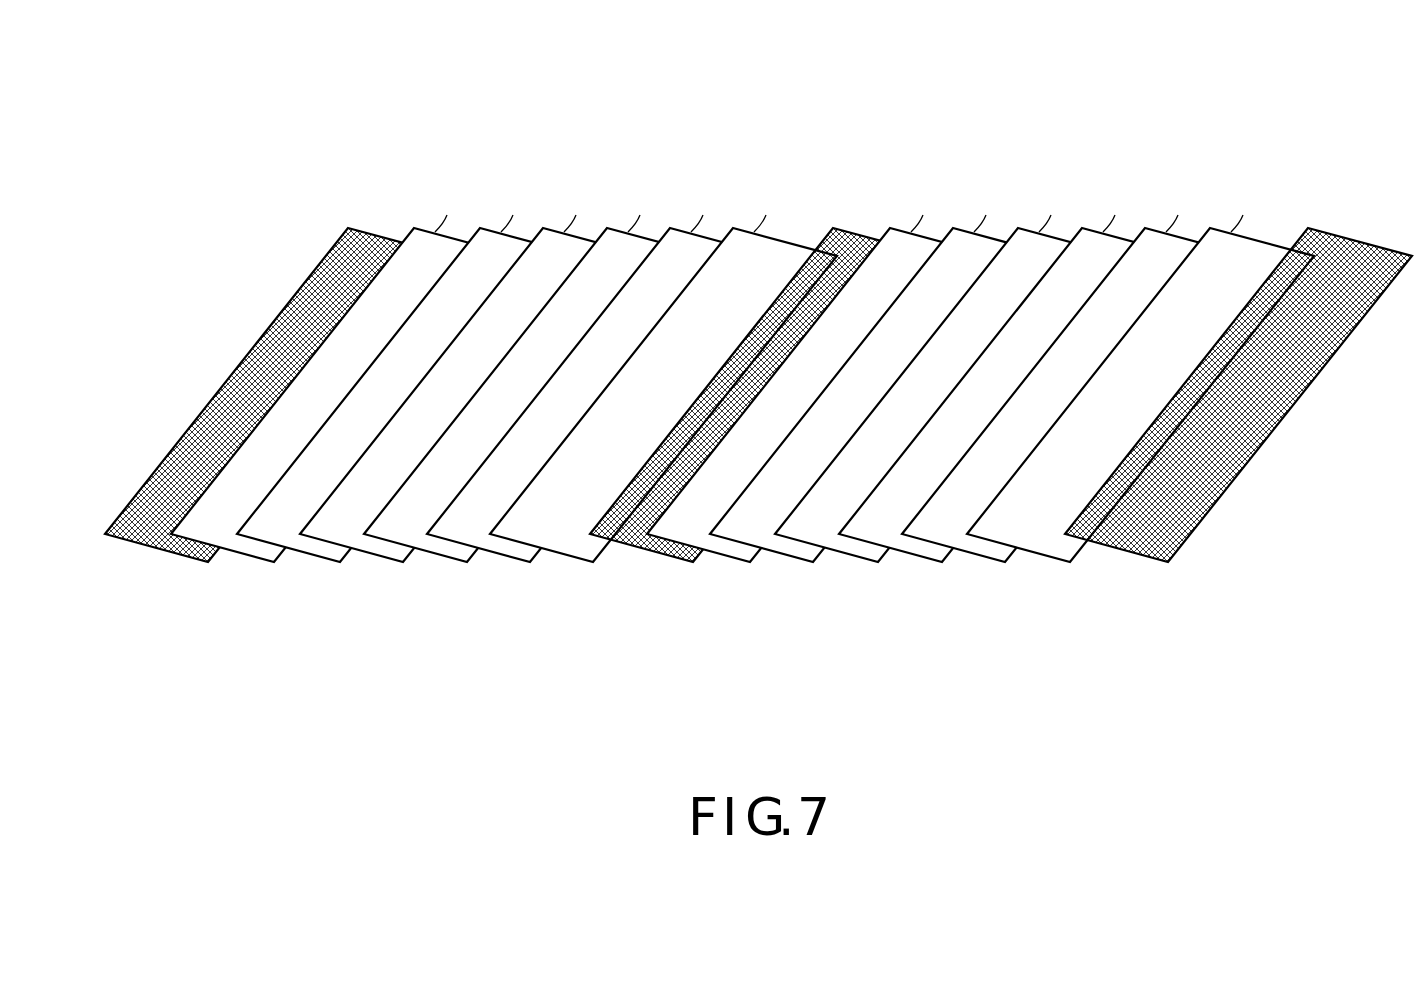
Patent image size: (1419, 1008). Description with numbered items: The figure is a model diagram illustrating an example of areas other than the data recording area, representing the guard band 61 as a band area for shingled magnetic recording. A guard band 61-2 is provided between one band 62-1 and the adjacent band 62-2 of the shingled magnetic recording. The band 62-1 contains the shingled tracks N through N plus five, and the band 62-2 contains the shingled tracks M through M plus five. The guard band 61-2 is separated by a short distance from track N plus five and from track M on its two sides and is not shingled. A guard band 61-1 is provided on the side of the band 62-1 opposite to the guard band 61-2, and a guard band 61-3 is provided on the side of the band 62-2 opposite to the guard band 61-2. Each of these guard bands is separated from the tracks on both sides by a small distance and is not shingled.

The guard band 61 is at (751, 388).
The guard band 61-1 is at (137, 545).
The guard band 61-2 is at (645, 549).
The guard band 61-3 is at (1145, 557).
The band 62-1 is at (603, 613).
The band 62-2 is at (1063, 613).